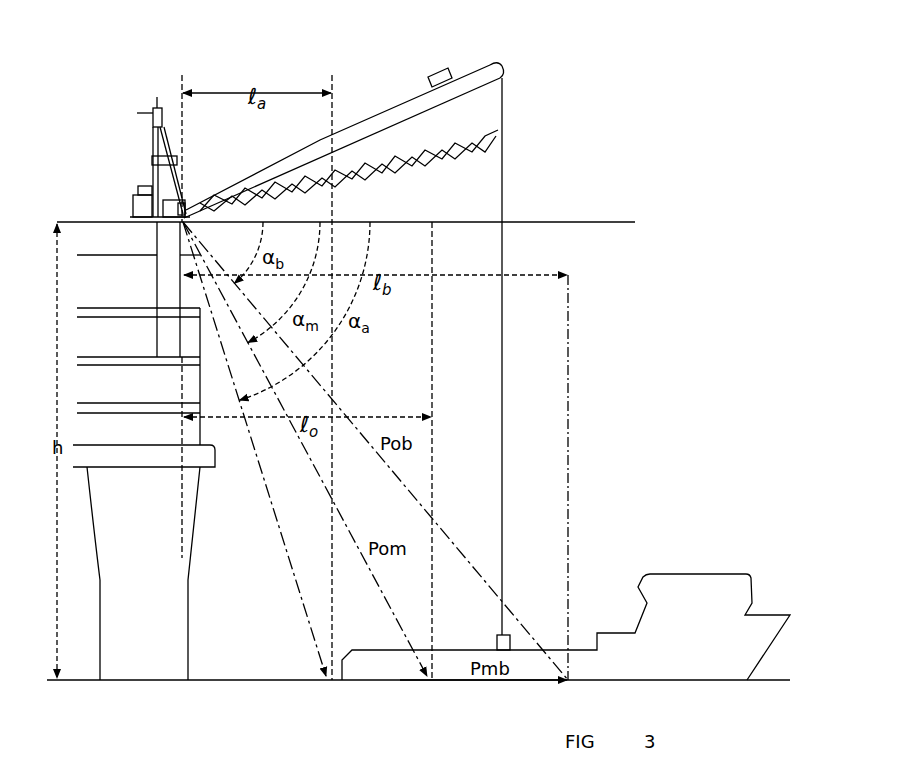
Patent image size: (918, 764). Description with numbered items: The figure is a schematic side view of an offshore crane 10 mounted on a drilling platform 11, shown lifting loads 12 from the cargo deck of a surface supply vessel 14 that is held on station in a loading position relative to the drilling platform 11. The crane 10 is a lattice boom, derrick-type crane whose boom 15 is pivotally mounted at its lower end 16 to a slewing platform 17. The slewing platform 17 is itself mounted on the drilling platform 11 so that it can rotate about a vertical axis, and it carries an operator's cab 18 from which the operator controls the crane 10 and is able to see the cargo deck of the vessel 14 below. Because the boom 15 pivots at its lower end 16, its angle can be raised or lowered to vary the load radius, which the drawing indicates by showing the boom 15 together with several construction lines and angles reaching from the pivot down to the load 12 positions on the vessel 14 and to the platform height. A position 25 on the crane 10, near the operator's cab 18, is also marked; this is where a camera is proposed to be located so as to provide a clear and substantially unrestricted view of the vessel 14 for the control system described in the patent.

The offshore crane 10 is at (170, 74).
The drilling platform 11 is at (163, 620).
The load 12 is at (505, 635).
The surface supply vessel 14 is at (710, 587).
The boom 15 is at (380, 107).
The lower end of the boom 16 is at (192, 203).
The slewing platform 17 is at (113, 217).
The operator's cab 18 is at (163, 175).
The camera position 25 is at (225, 222).